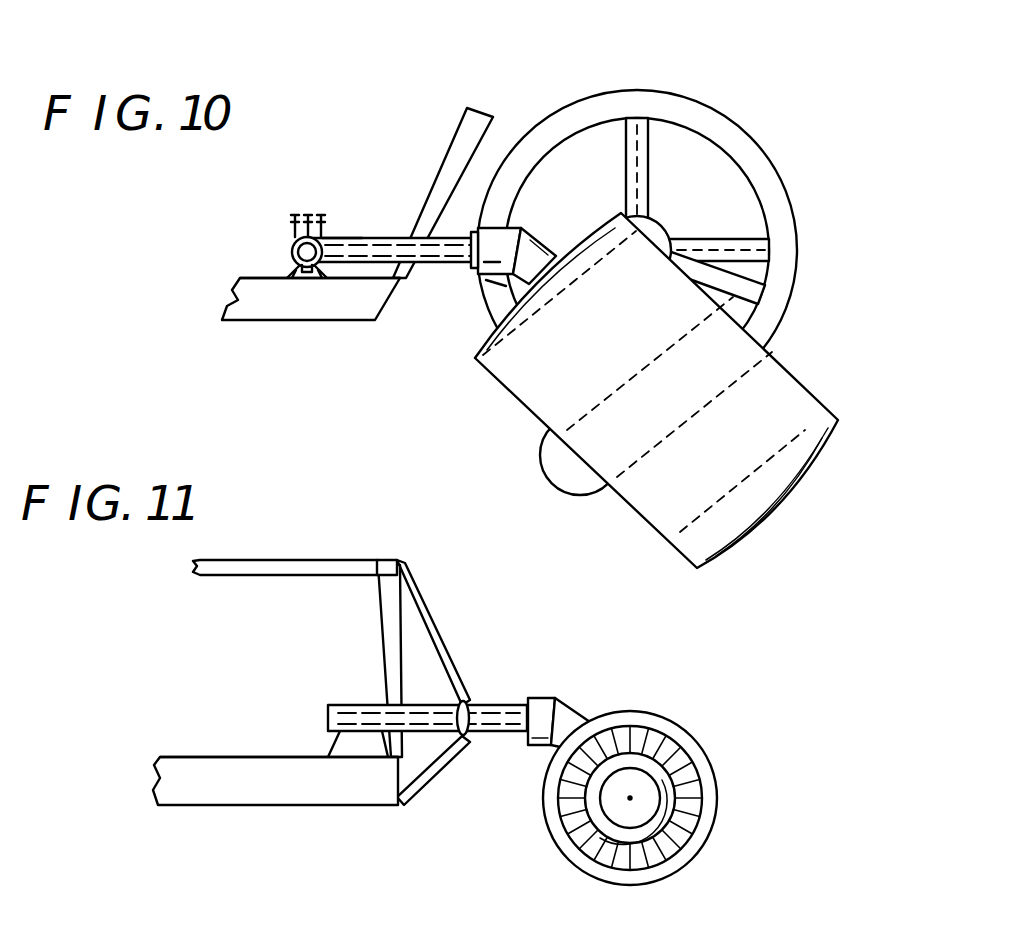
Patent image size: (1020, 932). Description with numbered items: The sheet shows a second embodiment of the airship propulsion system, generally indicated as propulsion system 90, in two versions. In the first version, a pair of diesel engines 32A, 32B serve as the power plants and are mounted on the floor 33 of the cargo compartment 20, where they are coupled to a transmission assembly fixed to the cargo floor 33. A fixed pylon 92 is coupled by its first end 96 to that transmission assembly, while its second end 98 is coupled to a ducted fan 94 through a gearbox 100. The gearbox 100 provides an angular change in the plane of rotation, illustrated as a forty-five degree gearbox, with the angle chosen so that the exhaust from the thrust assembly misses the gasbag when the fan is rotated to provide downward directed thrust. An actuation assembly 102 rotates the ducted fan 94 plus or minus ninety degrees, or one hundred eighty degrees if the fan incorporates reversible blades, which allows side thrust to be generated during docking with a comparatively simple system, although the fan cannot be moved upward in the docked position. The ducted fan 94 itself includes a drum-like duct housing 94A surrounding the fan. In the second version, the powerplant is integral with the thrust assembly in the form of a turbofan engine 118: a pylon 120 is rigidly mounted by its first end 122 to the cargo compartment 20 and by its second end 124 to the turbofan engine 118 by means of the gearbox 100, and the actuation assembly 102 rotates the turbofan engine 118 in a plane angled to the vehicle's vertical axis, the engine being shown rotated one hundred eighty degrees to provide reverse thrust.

In FIG. 10, the cargo compartment 20 is at (287, 322).
In FIG. 11, the cargo compartment 20 is at (258, 805).
In FIG. 10, the floor 33 is at (247, 278).
In FIG. 11, the floor 33 is at (218, 757).
In FIG. 10, the diesel engine 32A is at (305, 214).
In FIG. 10, the diesel engine 32B is at (291, 191).
In FIG. 10, the propulsion system 90 is at (421, 325).
In FIG. 10, the fixed pylon 92 is at (383, 238).
In FIG. 10, the first end 96 is at (343, 238).
In FIG. 10, the second end 98 is at (486, 291).
In FIG. 10, the gearbox 100 is at (497, 228).
In FIG. 11, the gearbox 100 is at (533, 749).
In FIG. 10, the actuation assembly 102 is at (553, 236).
In FIG. 11, the actuation assembly 102 is at (545, 758).
In FIG. 10, the ducted fan 94 is at (765, 157).
In FIG. 10, the drum 94A is at (795, 372).
In FIG. 11, the turbofan engine 118 is at (717, 793).
In FIG. 11, the pylon 120 is at (483, 705).
In FIG. 11, the first end 122 is at (438, 632).
In FIG. 11, the second end 124 is at (572, 690).